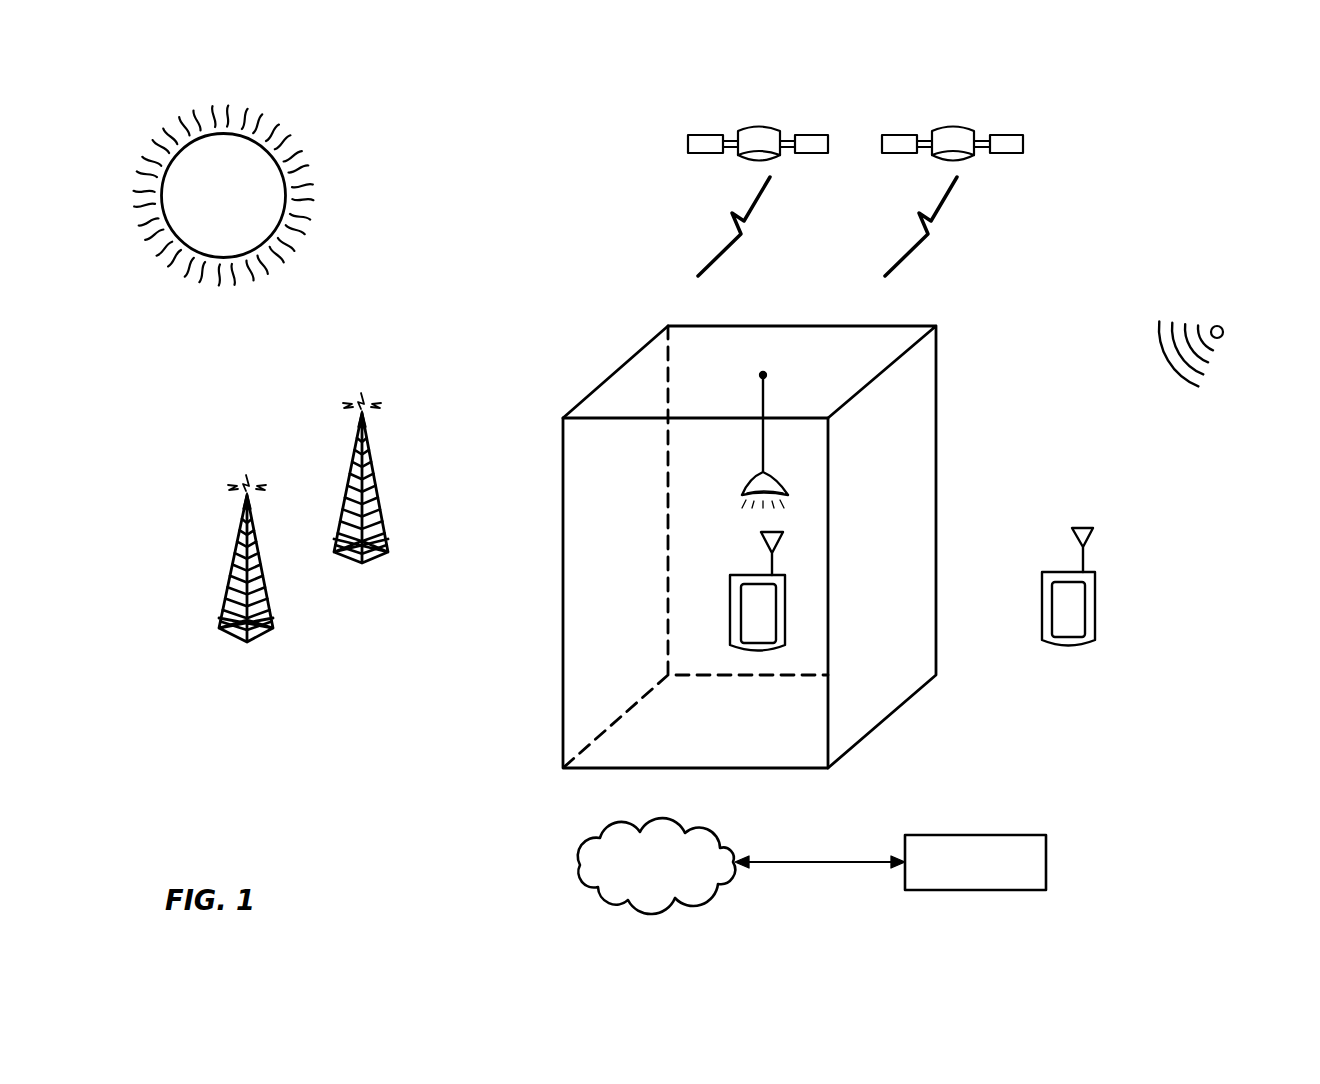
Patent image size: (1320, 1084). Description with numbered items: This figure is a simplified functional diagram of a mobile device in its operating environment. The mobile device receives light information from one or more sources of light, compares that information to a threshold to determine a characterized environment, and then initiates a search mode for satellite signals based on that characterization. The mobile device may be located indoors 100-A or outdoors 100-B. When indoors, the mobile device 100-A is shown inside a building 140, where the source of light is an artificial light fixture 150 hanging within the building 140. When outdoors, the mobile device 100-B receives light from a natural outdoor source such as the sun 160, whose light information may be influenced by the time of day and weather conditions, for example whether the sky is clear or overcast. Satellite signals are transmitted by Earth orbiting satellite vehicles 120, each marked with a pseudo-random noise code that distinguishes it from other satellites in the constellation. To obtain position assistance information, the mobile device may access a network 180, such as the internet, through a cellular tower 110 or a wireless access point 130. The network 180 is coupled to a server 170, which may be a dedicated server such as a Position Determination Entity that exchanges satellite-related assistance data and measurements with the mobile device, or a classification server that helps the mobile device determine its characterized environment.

The mobile device located indoors 100-A is at (760, 575).
The mobile device located outdoors 100-B is at (1052, 572).
The cellular tower 110 is at (353, 619).
The satellite vehicles 120 is at (851, 199).
The wireless access point 130 is at (1218, 325).
The building 140 is at (563, 506).
The light fixture 150 is at (753, 479).
The sun 160 is at (262, 143).
The server 170 is at (990, 835).
The network 180 is at (584, 838).